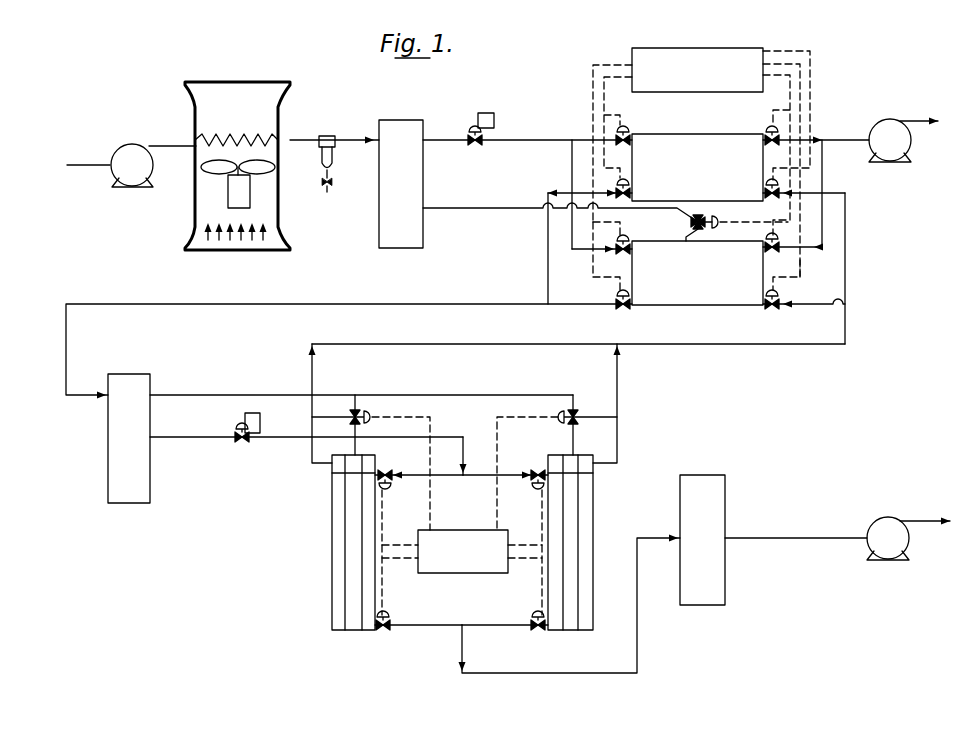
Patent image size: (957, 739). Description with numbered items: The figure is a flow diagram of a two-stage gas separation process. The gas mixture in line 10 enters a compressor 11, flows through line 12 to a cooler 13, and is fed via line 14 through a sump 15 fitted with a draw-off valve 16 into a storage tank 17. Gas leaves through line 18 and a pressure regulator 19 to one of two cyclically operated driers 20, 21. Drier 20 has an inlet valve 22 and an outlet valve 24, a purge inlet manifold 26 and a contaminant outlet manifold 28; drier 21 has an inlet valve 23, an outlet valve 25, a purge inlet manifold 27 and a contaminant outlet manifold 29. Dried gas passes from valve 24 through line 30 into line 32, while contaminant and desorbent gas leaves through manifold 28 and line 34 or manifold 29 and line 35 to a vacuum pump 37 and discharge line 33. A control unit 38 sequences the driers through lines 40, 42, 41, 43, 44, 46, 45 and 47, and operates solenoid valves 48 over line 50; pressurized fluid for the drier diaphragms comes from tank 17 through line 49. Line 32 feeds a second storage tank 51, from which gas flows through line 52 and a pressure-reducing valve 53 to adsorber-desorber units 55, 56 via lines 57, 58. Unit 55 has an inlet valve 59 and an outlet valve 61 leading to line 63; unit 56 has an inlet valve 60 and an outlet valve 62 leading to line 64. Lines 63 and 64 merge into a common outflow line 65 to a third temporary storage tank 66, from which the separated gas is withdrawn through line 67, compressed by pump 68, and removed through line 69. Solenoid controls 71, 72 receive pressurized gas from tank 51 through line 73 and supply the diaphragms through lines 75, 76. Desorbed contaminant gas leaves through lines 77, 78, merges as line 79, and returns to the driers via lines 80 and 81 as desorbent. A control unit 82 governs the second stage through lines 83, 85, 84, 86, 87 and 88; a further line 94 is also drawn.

The line 10 is at (97, 167).
The compressor 11 is at (138, 177).
The line 12 is at (180, 144).
The cooler 13 is at (315, 85).
The line 14 is at (300, 138).
The sump 15 is at (325, 137).
The draw-off valve 16 is at (330, 192).
The storage tank 17 is at (400, 120).
The line 18 is at (447, 138).
The pressure regulator 19 is at (473, 150).
The drier 20 is at (708, 167).
The drier 21 is at (712, 275).
The valve 22 is at (631, 136).
The valve 23 is at (633, 246).
The valve 24 is at (548, 190).
The valve 25 is at (630, 309).
The manifold 26 is at (800, 197).
The manifold 27 is at (768, 309).
The manifold 28 is at (816, 129).
The manifold 29 is at (792, 252).
The line 30 is at (552, 212).
The line 32 is at (434, 303).
The line 33 is at (918, 119).
The line 34 is at (804, 138).
The line 35 is at (830, 240).
The vacuum pump 37 is at (908, 156).
The control unit 38 is at (724, 47).
The line 40 is at (590, 103).
The line 41 is at (593, 218).
The line 42 is at (588, 138).
The line 43 is at (593, 270).
The line 44 is at (800, 165).
The line 45 is at (808, 272).
The line 46 is at (784, 112).
The line 47 is at (736, 224).
The solenoid valves 48 is at (735, 225).
The line 49 is at (472, 212).
The line 50 is at (806, 232).
The second storage tank 51 is at (108, 455).
The line 52 is at (208, 437).
The pressure-reducing valve 53 is at (240, 447).
The adsorber-desorber unit 55 is at (332, 546).
The adsorber-desorber unit 56 is at (596, 492).
The line 57 is at (450, 446).
The line 58 is at (488, 476).
The valve 59 is at (405, 462).
The valve 60 is at (540, 466).
The valve 61 is at (383, 631).
The valve 62 is at (537, 631).
The line 63 is at (462, 622).
The line 64 is at (502, 623).
The common outflow line 65 is at (520, 673).
The third temporary storage tank 66 is at (712, 478).
The line 67 is at (808, 520).
The pump 68 is at (872, 548).
The line 69 is at (928, 519).
The solenoid control 71 is at (375, 412).
The solenoid control 72 is at (560, 410).
The line 73 is at (240, 393).
The line 75 is at (332, 457).
The line 76 is at (576, 441).
The line 77 is at (314, 380).
The line 78 is at (617, 378).
The line 79 is at (842, 345).
The line 80 is at (826, 178).
The line 81 is at (850, 316).
The control unit 82 is at (482, 565).
The line 83 is at (382, 518).
The line 84 is at (545, 540).
The line 85 is at (388, 575).
The line 86 is at (530, 568).
The line 87 is at (430, 410).
The line 88 is at (497, 500).
The line 94 is at (358, 404).